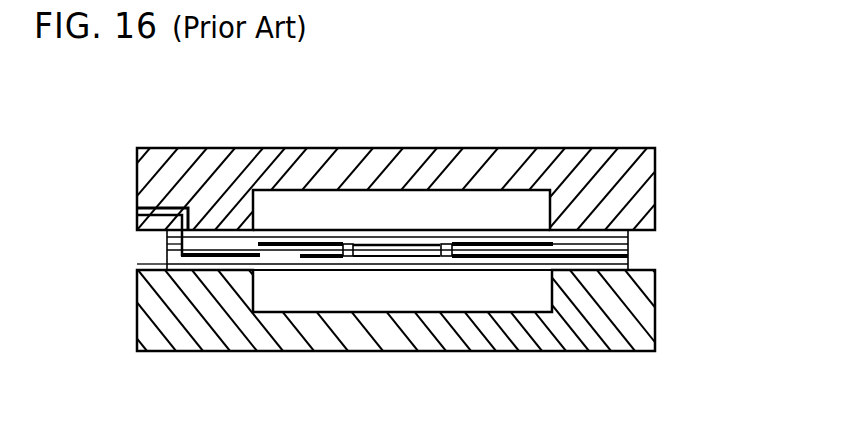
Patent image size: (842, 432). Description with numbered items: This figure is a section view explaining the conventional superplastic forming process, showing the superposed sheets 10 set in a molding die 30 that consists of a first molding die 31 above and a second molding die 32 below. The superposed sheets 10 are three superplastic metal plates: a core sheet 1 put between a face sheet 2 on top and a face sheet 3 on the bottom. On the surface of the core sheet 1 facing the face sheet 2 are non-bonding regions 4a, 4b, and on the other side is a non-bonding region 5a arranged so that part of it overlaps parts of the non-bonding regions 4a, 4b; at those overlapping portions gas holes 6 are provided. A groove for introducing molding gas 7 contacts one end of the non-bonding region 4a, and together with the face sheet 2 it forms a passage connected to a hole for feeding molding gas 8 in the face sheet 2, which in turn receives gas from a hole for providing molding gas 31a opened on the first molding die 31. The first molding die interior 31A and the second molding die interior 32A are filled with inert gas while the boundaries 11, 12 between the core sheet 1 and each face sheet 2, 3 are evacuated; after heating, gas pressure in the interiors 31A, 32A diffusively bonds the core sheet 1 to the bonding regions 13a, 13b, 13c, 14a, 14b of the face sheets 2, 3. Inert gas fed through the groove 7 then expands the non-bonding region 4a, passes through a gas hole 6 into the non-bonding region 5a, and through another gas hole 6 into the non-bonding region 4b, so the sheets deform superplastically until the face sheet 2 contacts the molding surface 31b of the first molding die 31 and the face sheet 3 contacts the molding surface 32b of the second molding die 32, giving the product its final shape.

The molding die 30 is at (647, 131).
The first molding die 31 is at (618, 200).
The hole for providing molding gas 31a is at (158, 228).
The first molding die interior 31A is at (358, 203).
The molding surface 31b is at (482, 226).
The bonding region 13a is at (228, 225).
The bonding region 13b is at (404, 232).
The bonding region 13c is at (580, 245).
The face sheet 2 is at (630, 236).
The non-bonding region 4a is at (290, 228).
The non-bonding region 4b is at (527, 238).
The boundary 11 is at (317, 229).
The core sheet 1 is at (630, 246).
The non-bonding region 5a is at (363, 259).
The groove for introducing molding gas 7 is at (192, 258).
The hole for feeding molding gas 8 is at (166, 243).
The gas hole 6 is at (343, 258).
The boundary 12 is at (278, 271).
The bonding region 14a is at (238, 263).
The bonding region 14b is at (542, 265).
The face sheet 3 is at (616, 267).
The second molding die 32 is at (588, 322).
The second molding die interior 32A is at (406, 303).
The molding surface 32b is at (492, 318).
The superposed sheets 10 is at (661, 269).